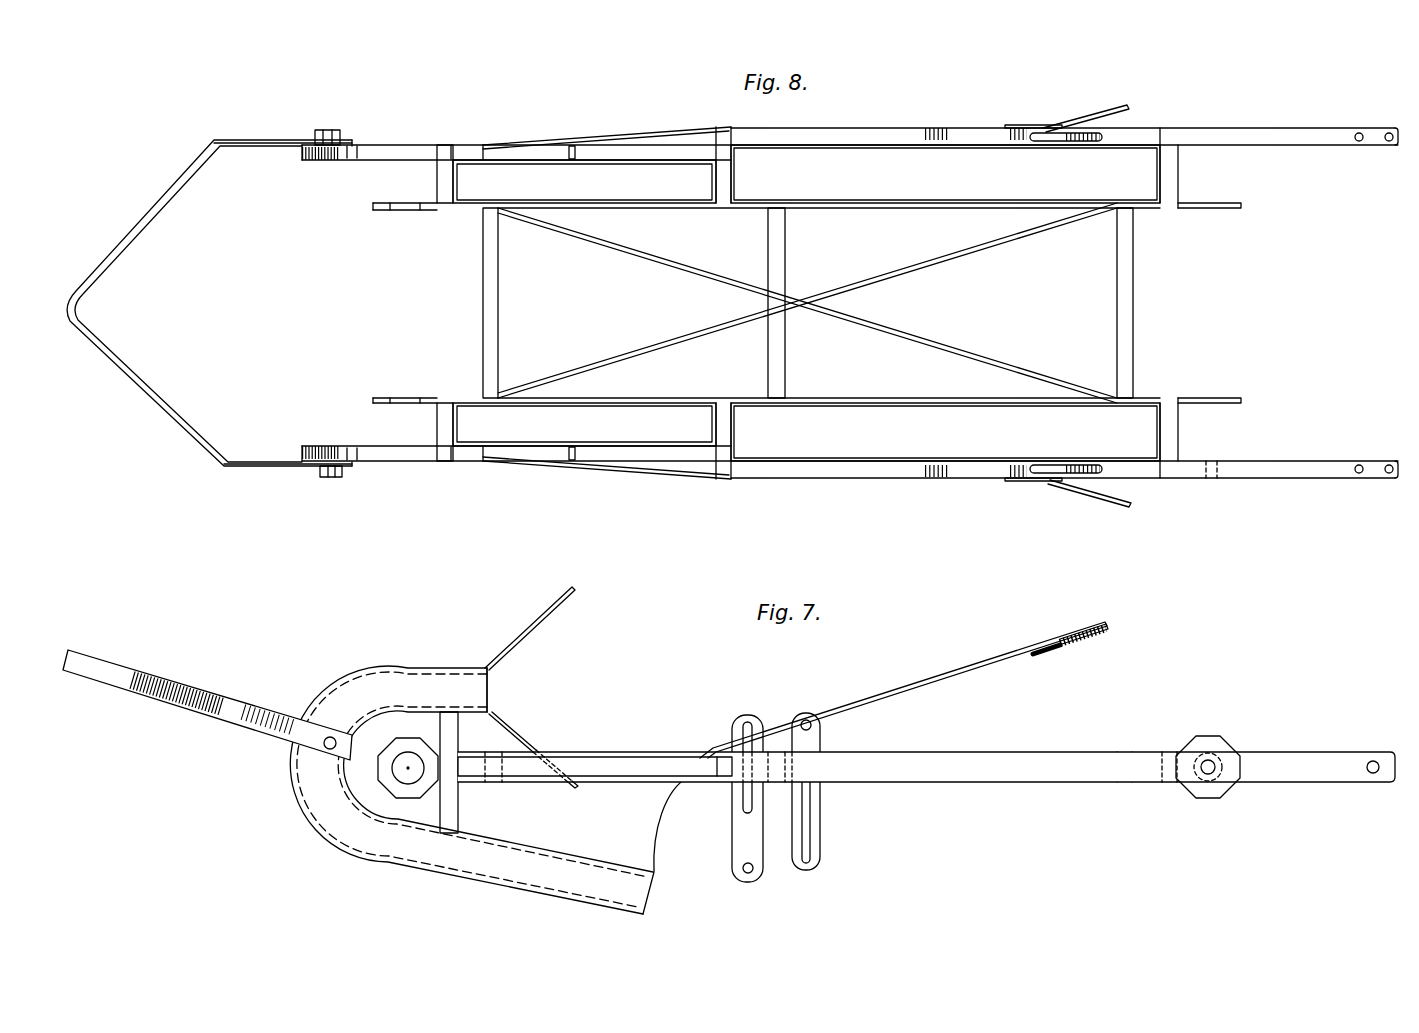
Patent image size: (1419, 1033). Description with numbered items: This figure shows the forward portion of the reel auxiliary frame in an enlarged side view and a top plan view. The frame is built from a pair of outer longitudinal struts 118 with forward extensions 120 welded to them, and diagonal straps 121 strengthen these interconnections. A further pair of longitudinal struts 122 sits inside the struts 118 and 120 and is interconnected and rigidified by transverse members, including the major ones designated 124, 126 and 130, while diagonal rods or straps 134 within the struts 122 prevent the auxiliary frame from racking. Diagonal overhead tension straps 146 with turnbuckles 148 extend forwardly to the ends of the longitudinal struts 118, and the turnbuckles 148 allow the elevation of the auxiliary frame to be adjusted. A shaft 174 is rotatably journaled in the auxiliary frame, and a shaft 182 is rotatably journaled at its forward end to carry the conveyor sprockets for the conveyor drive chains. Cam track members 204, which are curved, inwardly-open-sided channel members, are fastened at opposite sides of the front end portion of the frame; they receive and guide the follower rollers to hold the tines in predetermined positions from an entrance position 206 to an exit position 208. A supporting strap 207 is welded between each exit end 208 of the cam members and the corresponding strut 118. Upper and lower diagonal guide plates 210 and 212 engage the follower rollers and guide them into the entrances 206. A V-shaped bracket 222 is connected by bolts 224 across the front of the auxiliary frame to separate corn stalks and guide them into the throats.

In FIG. 8, the forward extension 120 is at (850, 303).
In FIG. 7, the forward extension 120 is at (670, 752).
In FIG. 8, the diagonal strap 121 is at (599, 131).
In FIG. 7, the diagonal strap 121 is at (602, 770).
In FIG. 8, the outer longitudinal strut 118 is at (659, 148).
In FIG. 8, the longitudinal strut 122 is at (684, 212).
In FIG. 8, the transverse member 124 is at (483, 304).
In FIG. 7, the transverse member 124 is at (493, 780).
In FIG. 8, the transverse member 126 is at (727, 178).
In FIG. 8, the transverse member 130 is at (1172, 163).
In FIG. 7, the transverse member 130 is at (1168, 762).
In FIG. 8, the diagonal rod 134 is at (956, 261).
In FIG. 8, the diagonal overhead tension strap 146 is at (952, 129).
In FIG. 7, the diagonal overhead tension strap 146 is at (933, 683).
In FIG. 8, the turnbuckle 148 is at (1083, 132).
In FIG. 7, the turnbuckle 148 is at (1078, 635).
In FIG. 7, the shaft 174 is at (1210, 775).
In FIG. 7, the shaft 182 is at (403, 772).
In FIG. 8, the cam track member 204 is at (319, 152).
In FIG. 7, the cam track member 204 is at (352, 687).
In FIG. 8, the entrance position 206 is at (485, 444).
In FIG. 7, the entrance position 206 is at (485, 663).
In FIG. 7, the supporting strap 207 is at (667, 833).
In FIG. 7, the exit position 208 is at (652, 912).
In FIG. 8, the upper diagonal guide plate 210 is at (554, 454).
In FIG. 7, the upper diagonal guide plate 210 is at (565, 598).
In FIG. 7, the lower diagonal guide plate 212 is at (525, 742).
In FIG. 8, the V-shaped bracket 222 is at (119, 242).
In FIG. 7, the V-shaped bracket 222 is at (153, 698).
In FIG. 8, the bolt 224 is at (331, 478).
In FIG. 7, the bolt 224 is at (325, 749).